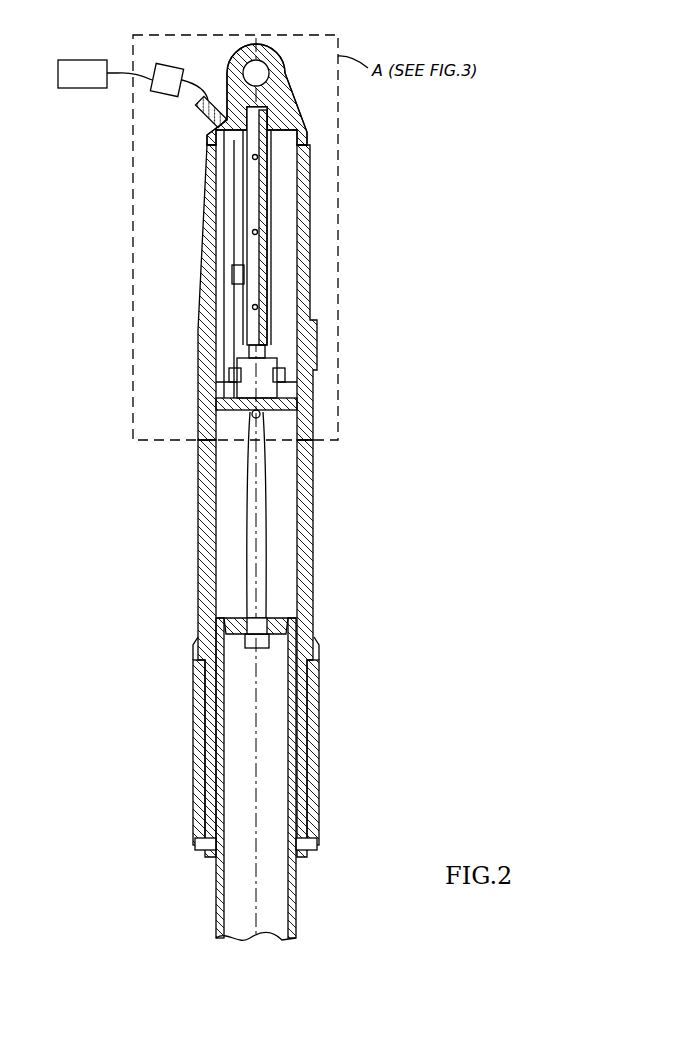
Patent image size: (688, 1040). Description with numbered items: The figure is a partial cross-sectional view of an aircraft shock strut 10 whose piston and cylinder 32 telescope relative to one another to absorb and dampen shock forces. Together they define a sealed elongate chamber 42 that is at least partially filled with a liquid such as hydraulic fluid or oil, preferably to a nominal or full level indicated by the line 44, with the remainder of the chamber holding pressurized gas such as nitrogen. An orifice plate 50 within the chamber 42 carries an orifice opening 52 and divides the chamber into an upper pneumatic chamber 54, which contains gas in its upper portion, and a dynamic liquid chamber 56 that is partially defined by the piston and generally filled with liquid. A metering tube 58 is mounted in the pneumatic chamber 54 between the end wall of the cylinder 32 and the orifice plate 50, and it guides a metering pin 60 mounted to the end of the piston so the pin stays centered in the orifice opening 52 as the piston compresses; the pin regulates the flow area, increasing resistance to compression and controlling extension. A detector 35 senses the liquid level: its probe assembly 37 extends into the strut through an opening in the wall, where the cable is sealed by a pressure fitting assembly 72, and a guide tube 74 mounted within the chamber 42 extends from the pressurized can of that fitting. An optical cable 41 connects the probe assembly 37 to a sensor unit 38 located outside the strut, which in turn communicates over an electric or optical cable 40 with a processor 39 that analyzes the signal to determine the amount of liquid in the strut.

The shock strut 10 is at (325, 570).
The cylinder 32 is at (313, 518).
The detector 35 is at (160, 199).
The probe assembly 37 is at (207, 334).
The sensor unit 38 is at (160, 97).
The processor 39 is at (80, 90).
The cable 40 is at (118, 73).
The optical cable 41 is at (205, 98).
The sealed elongate chamber 42 is at (227, 473).
The nominal liquid level line 44 is at (290, 288).
The orifice plate 50 is at (300, 418).
The orifice opening 52 is at (216, 398).
The pneumatic chamber 54 is at (295, 212).
The dynamic liquid chamber 56 is at (290, 483).
The metering tube 58 is at (300, 178).
The metering pin 60 is at (247, 553).
The pressure fitting assembly 72 is at (196, 122).
The guide tube 74 is at (202, 358).